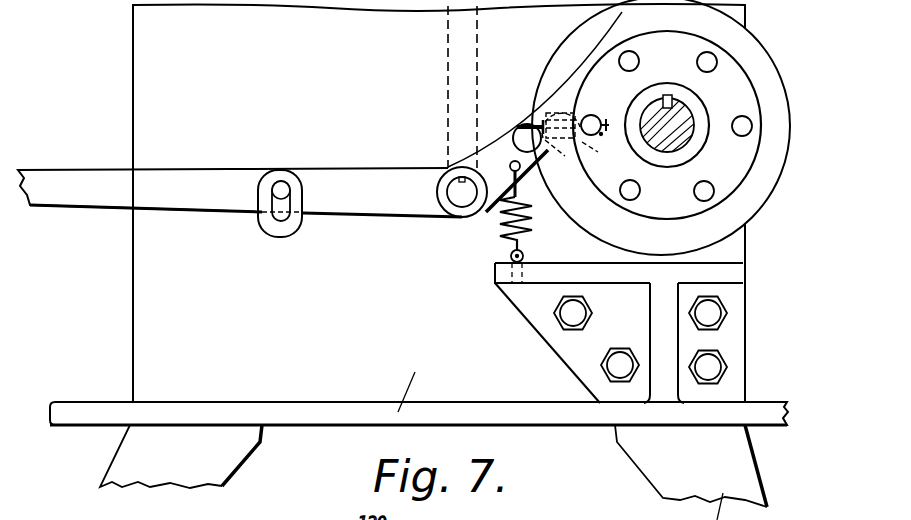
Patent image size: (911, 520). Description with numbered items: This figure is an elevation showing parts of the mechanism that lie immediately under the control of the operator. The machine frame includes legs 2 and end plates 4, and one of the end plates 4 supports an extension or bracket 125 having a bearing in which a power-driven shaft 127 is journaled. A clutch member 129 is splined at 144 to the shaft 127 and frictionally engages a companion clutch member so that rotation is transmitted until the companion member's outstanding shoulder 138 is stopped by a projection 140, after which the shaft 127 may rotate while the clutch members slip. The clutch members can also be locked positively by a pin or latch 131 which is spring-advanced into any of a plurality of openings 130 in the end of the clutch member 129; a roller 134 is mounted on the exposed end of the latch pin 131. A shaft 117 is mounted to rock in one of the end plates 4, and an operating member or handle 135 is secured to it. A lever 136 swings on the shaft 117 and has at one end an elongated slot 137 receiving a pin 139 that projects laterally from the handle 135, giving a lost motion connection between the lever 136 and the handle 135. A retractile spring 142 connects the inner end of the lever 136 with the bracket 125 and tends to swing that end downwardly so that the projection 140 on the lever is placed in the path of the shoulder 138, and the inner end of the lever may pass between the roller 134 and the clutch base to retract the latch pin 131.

The legs 2 is at (235, 450).
The end plates 4 is at (132, 318).
The shaft 117 is at (458, 208).
The extension or bracket 125 is at (740, 277).
The power-driven shaft 127 is at (690, 118).
The clutch member 129 is at (625, 24).
The openings 130 is at (707, 62).
The pin or latch 131 is at (592, 117).
The roller 134 is at (587, 157).
The operating member or handle 135 is at (200, 198).
The lever 136 is at (382, 200).
The elongated slot 137 is at (282, 220).
The shoulder 138 is at (541, 110).
The pin 139 is at (281, 190).
The projection 140 is at (527, 137).
The retractile spring 142 is at (530, 228).
The spline 144 is at (667, 95).